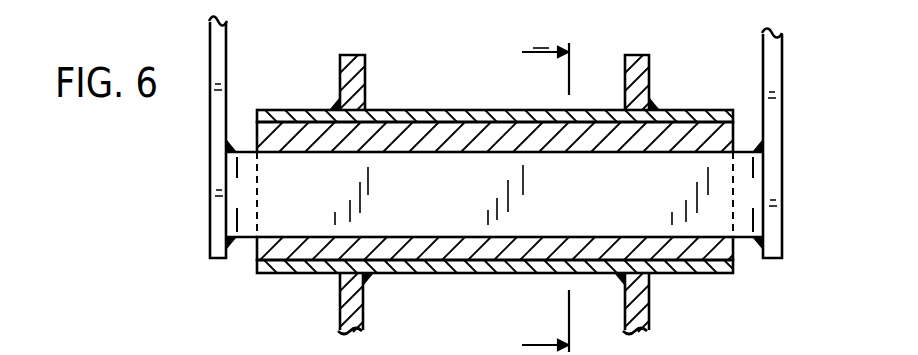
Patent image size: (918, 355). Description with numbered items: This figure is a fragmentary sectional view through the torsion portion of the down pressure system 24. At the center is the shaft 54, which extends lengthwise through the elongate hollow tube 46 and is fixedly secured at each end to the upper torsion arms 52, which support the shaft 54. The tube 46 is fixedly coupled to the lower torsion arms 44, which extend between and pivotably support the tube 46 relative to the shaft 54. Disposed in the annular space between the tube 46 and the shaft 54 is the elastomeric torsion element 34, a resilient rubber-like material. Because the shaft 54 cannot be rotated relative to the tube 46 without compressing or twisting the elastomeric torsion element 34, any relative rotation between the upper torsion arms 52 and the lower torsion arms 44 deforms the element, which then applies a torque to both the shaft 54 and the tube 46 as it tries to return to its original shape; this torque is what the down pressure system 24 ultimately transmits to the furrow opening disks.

The down pressure system 24 is at (689, 42).
The elastomeric torsion element 34 is at (416, 128).
The lower torsion arms 44 is at (365, 300).
The tube 46 is at (285, 110).
The upper torsion arms 52 is at (209, 140).
The shaft 54 is at (573, 206).